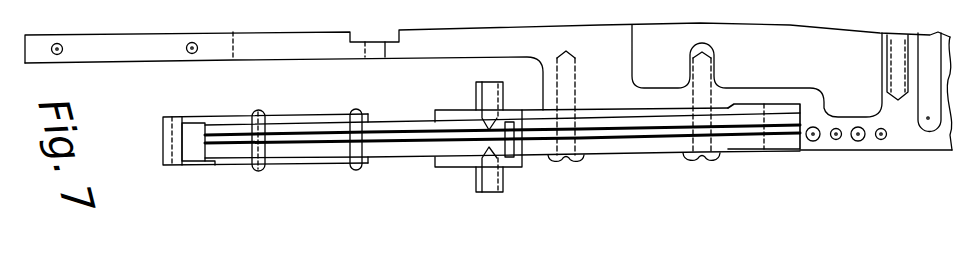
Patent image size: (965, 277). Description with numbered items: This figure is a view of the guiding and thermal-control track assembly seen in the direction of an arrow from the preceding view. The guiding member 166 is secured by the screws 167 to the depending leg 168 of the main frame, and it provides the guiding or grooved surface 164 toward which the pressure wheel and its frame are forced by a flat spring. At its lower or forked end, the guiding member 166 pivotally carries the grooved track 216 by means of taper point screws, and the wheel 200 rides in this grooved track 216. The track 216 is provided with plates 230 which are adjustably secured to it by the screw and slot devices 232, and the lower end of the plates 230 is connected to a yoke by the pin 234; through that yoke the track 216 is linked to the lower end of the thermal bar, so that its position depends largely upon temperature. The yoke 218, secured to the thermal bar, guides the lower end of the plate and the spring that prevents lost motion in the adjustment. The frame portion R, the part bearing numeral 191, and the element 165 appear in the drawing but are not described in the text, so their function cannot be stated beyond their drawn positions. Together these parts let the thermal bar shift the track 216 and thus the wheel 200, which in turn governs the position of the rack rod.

The receiver frame R is at (123, 42).
The depending leg 168 is at (733, 71).
The pin 234 is at (175, 168).
The plates 230 is at (213, 163).
The screw and slot device 232 is at (258, 170).
The grooved track 216 is at (410, 150).
The yoke 218 is at (489, 192).
The screws 167 is at (574, 162).
The guiding member 166 is at (632, 150).
The pin 191 is at (710, 162).
The grooved guiding surface 164 is at (750, 140).
The end block 165 is at (786, 146).
The wheel 200 is at (855, 146).